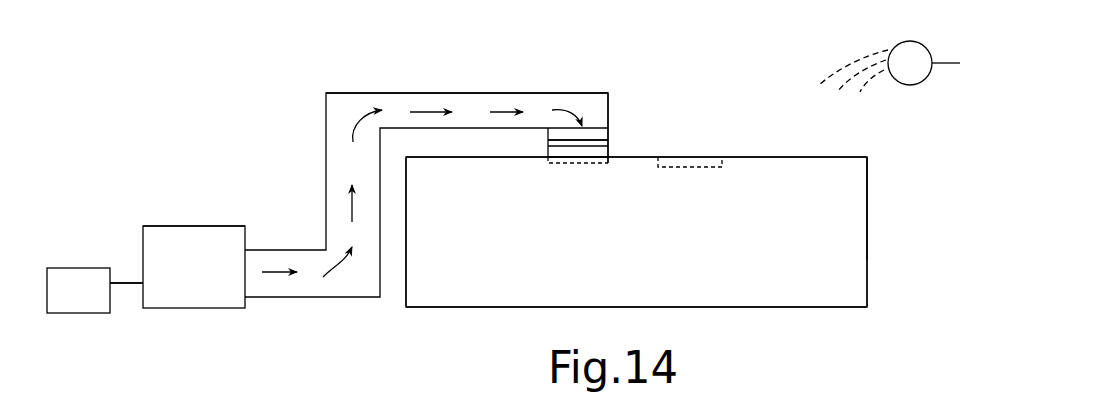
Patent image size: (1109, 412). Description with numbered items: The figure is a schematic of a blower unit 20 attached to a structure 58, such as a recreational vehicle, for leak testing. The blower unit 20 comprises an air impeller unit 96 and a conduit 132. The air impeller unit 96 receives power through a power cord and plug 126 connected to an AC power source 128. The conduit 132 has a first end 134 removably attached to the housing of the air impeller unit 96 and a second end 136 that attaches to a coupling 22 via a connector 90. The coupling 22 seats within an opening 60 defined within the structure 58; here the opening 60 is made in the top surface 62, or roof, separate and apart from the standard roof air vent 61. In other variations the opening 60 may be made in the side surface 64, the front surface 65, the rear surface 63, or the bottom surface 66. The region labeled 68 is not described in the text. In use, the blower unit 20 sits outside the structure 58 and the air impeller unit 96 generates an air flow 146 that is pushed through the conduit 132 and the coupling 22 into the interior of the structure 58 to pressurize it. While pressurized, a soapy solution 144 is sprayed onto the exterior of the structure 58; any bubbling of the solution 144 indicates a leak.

The blower unit 20 is at (292, 141).
The coupling 22 is at (604, 140).
The structure 58 is at (771, 229).
The opening 60 is at (610, 157).
The roof air vent 61 is at (707, 156).
The top surface 62 is at (781, 157).
The rear surface 63 is at (403, 276).
The side surface 64 is at (832, 248).
The front surface 65 is at (869, 257).
The bottom surface 66 is at (806, 310).
The interior 68 is at (842, 194).
The connector 90 is at (557, 140).
The air impeller unit 96 is at (208, 278).
The power cord and plug 126 is at (125, 282).
The power source 128 is at (96, 304).
The conduit 132 is at (402, 105).
The first end 134 is at (228, 220).
The second end 136 is at (626, 128).
The soapy solution 144 is at (835, 72).
The air flow 146 is at (362, 122).